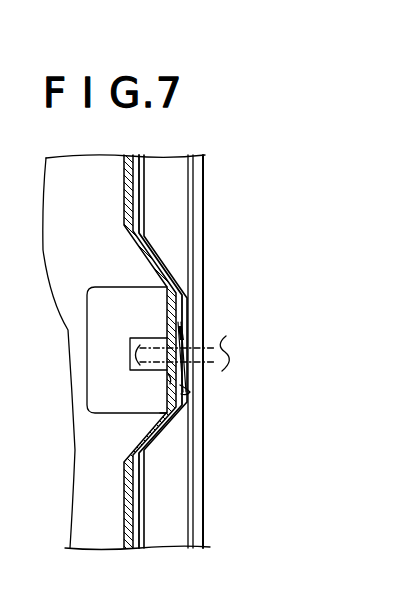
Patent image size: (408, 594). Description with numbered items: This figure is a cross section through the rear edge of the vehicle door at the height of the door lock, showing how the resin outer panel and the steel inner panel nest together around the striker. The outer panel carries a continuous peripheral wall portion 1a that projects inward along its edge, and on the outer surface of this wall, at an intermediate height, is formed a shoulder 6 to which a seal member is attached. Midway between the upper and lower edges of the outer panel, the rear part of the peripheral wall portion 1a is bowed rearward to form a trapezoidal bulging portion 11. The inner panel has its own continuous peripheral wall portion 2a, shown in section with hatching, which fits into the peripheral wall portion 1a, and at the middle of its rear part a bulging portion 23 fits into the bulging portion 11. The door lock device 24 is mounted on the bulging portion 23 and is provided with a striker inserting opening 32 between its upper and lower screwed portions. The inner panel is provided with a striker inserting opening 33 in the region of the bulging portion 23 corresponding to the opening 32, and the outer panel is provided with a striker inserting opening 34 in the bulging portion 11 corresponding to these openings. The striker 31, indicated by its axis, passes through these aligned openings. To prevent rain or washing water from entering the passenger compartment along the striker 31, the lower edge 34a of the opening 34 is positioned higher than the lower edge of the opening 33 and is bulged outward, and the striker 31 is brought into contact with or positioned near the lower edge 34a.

The peripheral wall portion 2a is at (122, 180).
The peripheral wall portion 1a is at (146, 197).
The shoulder 6 is at (147, 243).
The door lock device 24 is at (105, 285).
The striker inserting opening 32 is at (135, 352).
The striker 31 is at (231, 343).
The striker inserting opening 33 is at (157, 380).
The striker inserting opening 34 is at (184, 336).
The lower edge 34a is at (190, 390).
The bulging portion 23 is at (166, 402).
The bulging portion 11 is at (190, 415).